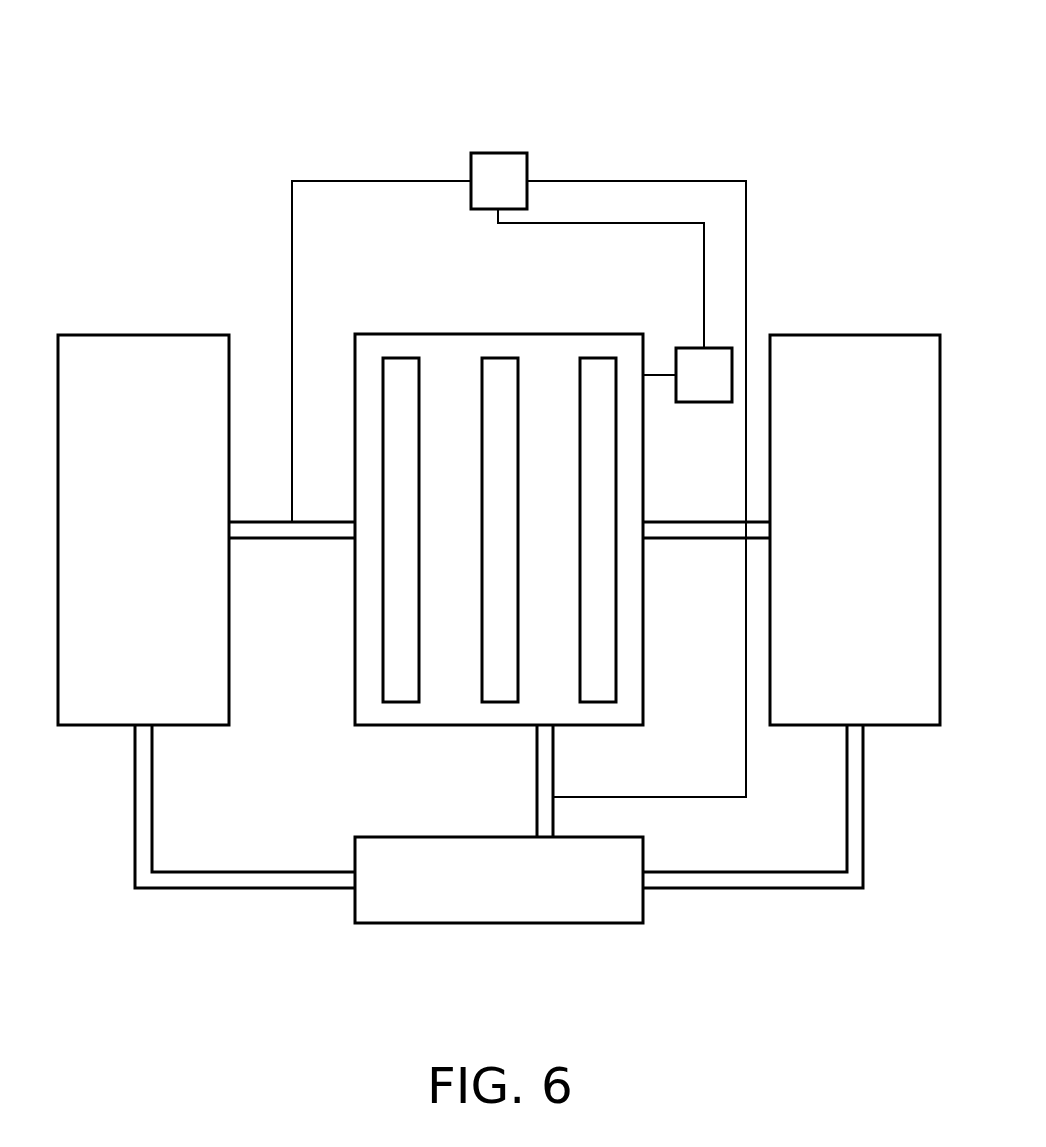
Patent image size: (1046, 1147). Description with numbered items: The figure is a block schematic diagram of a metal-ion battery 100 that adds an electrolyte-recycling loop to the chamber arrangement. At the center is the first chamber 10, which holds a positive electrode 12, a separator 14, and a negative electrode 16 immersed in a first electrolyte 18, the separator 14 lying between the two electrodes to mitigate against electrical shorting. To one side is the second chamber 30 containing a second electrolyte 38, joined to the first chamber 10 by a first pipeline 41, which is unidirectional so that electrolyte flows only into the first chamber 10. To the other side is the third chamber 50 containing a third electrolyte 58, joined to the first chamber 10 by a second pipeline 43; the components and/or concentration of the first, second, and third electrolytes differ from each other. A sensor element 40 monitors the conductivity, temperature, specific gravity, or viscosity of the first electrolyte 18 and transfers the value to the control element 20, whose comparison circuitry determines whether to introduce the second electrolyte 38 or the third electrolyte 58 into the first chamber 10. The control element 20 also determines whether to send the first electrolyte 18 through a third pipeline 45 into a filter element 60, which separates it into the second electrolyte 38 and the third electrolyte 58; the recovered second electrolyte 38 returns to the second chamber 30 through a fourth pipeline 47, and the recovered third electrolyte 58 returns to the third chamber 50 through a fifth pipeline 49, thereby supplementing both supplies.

The metal-ion battery 100 is at (828, 48).
The control element 20 is at (498, 153).
The sensor element 40 is at (691, 348).
The first chamber 10 is at (499, 520).
The first electrolyte 18 is at (530, 547).
The positive electrode 12 is at (403, 702).
The separator 14 is at (501, 702).
The negative electrode 16 is at (601, 702).
The third chamber 50 is at (143, 490).
The third electrolyte 58 is at (125, 548).
The second chamber 30 is at (855, 490).
The second electrolyte 38 is at (837, 548).
The filter element 60 is at (481, 896).
The second pipeline 43 is at (293, 540).
The first pipeline 41 is at (707, 540).
The third pipeline 45 is at (535, 815).
The fifth pipeline 49 is at (246, 890).
The fourth pipeline 47 is at (755, 890).